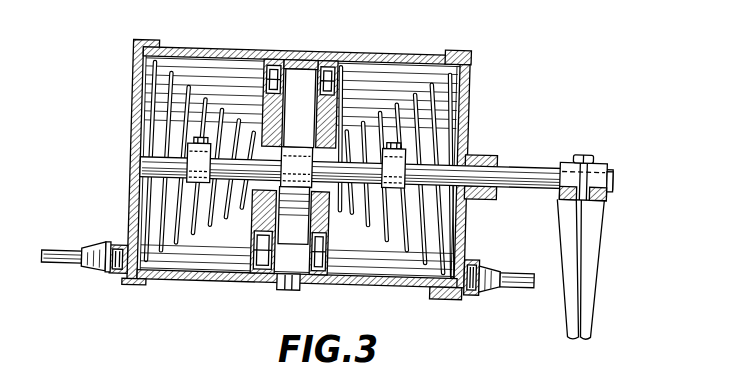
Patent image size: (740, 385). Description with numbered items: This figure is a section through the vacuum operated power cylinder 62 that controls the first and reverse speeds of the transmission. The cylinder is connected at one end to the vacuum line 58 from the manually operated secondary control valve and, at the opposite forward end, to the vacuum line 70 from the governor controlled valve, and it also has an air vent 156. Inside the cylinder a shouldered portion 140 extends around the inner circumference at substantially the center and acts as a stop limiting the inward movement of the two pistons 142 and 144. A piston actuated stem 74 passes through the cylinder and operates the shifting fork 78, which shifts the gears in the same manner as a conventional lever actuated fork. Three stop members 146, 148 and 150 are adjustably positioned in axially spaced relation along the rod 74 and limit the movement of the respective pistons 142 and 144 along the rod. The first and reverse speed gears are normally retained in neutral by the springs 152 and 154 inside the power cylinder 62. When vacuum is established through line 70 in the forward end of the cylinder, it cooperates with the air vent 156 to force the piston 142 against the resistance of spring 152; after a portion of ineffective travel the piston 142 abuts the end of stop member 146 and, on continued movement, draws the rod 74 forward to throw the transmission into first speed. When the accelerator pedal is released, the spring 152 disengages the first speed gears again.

The vacuum line 58 is at (523, 286).
The power cylinder 62 is at (388, 56).
The vacuum line 70 is at (57, 263).
The piston actuated stem 74 is at (513, 177).
The shifting fork 78 is at (591, 248).
The shouldered portion 140 is at (302, 56).
The piston 142 is at (260, 213).
The piston 144 is at (332, 225).
The stop member 146 is at (200, 162).
The stop member 148 is at (286, 189).
The stop member 150 is at (400, 158).
The spring 152 is at (181, 235).
The spring 154 is at (407, 250).
The air vent 156 is at (290, 290).